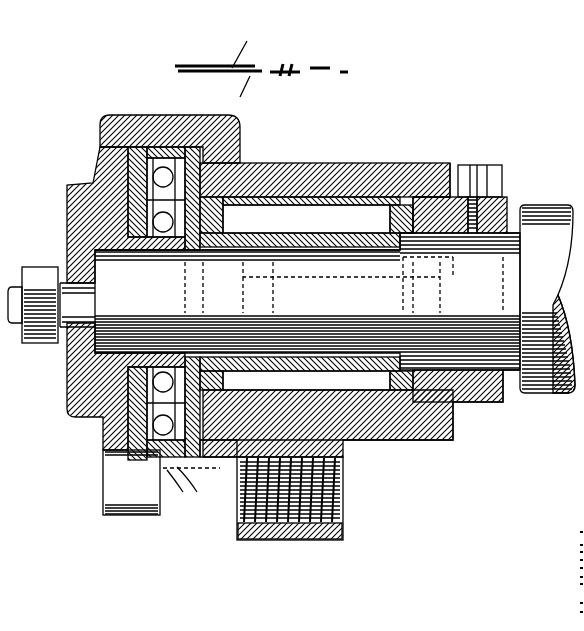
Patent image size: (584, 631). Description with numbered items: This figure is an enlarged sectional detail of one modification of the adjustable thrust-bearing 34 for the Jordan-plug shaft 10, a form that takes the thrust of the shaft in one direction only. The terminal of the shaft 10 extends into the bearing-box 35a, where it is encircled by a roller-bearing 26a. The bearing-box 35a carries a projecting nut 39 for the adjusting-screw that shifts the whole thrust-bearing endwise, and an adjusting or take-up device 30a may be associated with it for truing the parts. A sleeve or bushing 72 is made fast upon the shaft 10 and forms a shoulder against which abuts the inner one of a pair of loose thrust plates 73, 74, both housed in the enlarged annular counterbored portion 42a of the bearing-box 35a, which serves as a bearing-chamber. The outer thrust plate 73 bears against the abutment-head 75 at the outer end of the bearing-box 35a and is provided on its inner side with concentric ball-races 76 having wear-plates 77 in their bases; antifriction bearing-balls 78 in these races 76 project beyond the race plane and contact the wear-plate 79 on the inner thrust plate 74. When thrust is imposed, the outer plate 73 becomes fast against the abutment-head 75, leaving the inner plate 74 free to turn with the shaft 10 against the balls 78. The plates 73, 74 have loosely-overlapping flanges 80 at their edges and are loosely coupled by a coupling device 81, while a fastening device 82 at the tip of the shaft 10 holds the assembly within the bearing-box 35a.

The shaft 10 is at (317, 299).
The roller-bearing 26a is at (382, 208).
The adjusting or take-up device 30a is at (373, 443).
The adjustable thrust-bearing 34 is at (437, 265).
The bearing-box 35a is at (275, 173).
The projecting nut 39 is at (345, 498).
The counterbored portion 42a is at (157, 152).
The sleeve or bushing 72 is at (308, 230).
The outer thrust disk or plate 73 is at (137, 145).
The inner thrust disk or plate 74 is at (238, 140).
The abutment-head 75 is at (128, 155).
The concentric ball-races 76 is at (150, 178).
The wear-plates 77 is at (150, 216).
The antifriction bearing-balls 78 is at (135, 428).
The wear-plate 79 is at (203, 457).
The loosely-overlapping flanges 80 is at (183, 492).
The coupling device 81 is at (133, 478).
The fastening device 82 is at (50, 310).